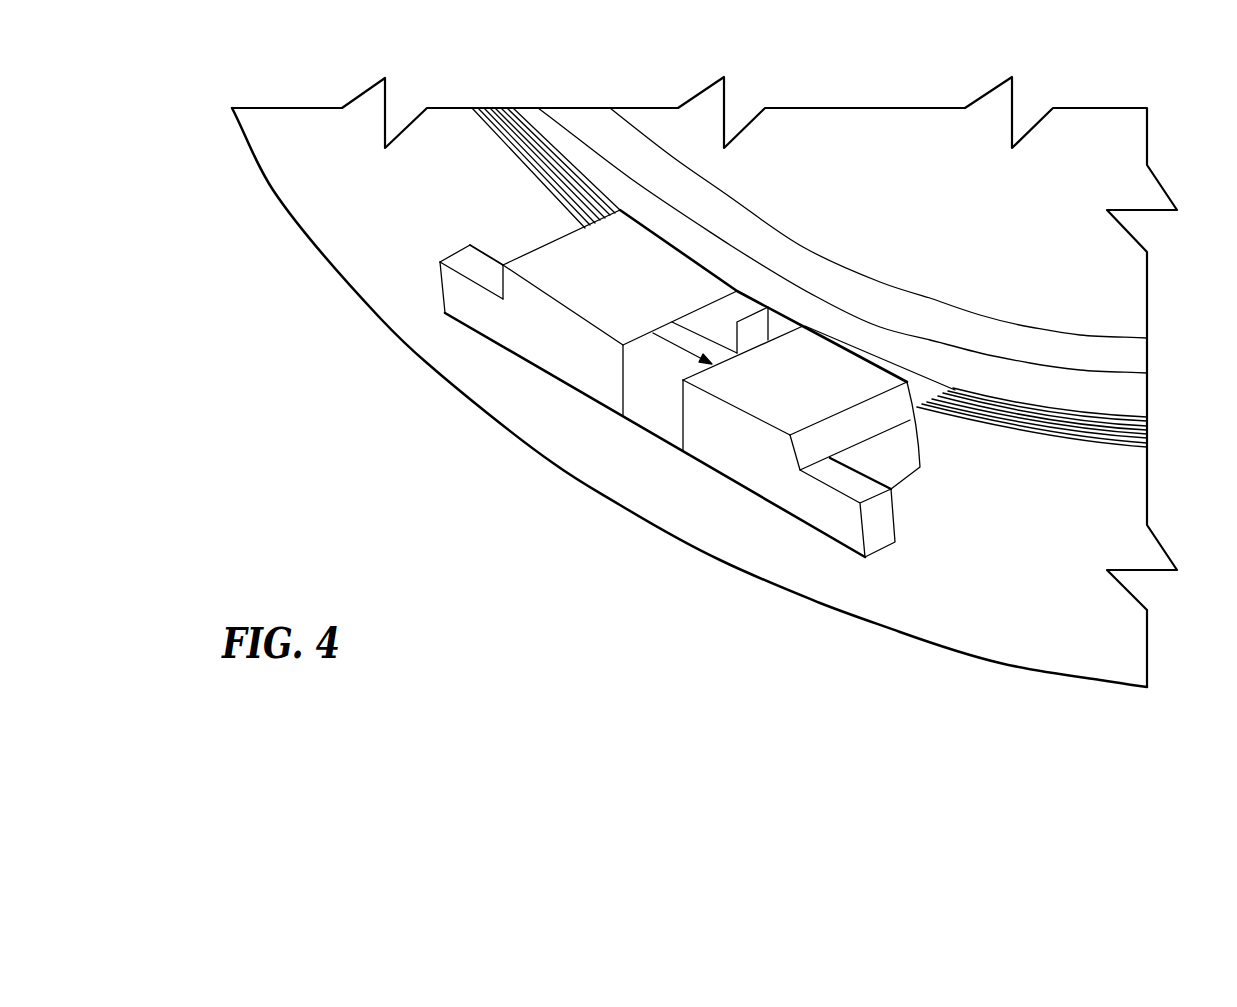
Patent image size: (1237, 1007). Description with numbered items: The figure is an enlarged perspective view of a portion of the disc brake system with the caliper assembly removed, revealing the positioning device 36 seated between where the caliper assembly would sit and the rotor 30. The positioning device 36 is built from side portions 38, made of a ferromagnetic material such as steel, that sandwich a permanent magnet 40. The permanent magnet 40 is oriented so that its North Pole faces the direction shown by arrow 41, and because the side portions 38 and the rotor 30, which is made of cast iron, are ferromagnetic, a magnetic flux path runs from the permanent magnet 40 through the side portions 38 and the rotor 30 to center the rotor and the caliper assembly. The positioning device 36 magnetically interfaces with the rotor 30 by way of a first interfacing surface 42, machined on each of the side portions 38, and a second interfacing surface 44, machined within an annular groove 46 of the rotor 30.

The rotor 30 is at (1037, 273).
The positioning device 36 is at (490, 314).
The side portions 38 is at (558, 272).
The permanent magnet 40 is at (663, 352).
The arrow 41 is at (687, 348).
The first interfacing surface 42 is at (890, 363).
The second interfacing surface 44 is at (500, 127).
The annular groove 46 is at (537, 143).